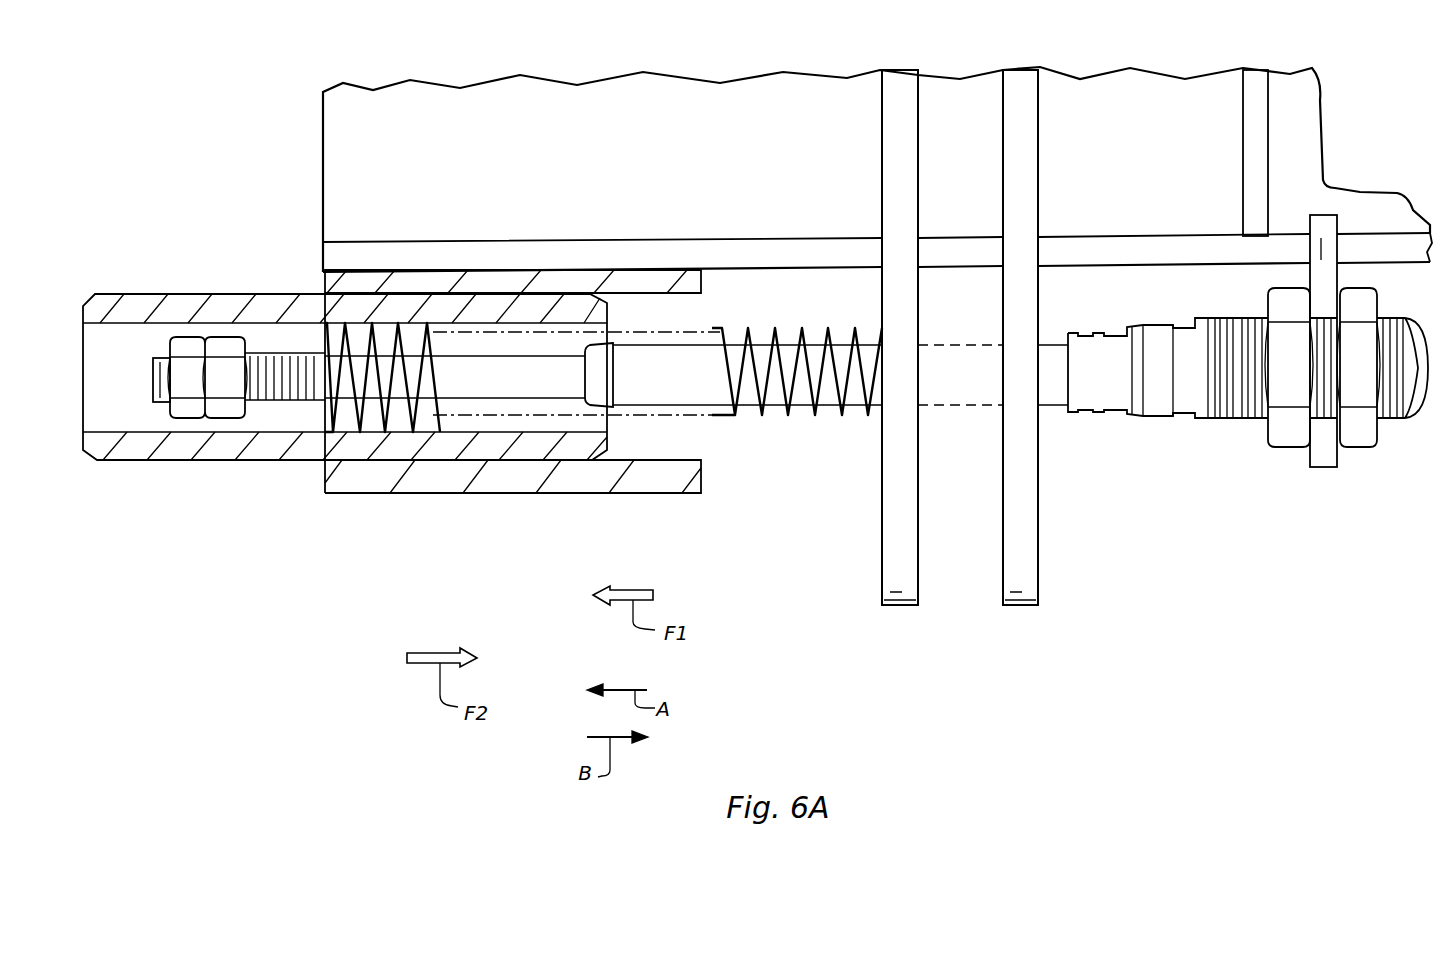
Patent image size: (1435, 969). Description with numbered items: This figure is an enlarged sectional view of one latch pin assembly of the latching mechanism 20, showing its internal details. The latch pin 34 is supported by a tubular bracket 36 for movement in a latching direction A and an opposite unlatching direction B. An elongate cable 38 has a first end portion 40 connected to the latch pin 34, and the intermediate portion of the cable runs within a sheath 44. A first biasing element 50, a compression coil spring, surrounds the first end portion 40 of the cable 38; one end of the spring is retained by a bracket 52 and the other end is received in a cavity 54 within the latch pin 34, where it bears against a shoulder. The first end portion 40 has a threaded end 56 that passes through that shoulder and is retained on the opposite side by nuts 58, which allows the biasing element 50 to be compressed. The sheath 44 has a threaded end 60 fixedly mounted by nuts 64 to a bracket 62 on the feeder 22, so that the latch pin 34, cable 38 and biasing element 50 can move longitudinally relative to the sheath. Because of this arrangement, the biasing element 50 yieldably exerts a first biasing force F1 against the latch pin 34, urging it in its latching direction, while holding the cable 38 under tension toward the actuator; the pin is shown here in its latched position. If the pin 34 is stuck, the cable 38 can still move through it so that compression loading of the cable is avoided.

The latching mechanism 20 is at (1178, 655).
The feeder 22 is at (323, 122).
The latch pin 34 is at (232, 462).
The tubular bracket 36 is at (488, 493).
The cable 38 is at (576, 423).
The first end portion 40 is at (773, 410).
The sheath 44 is at (1248, 442).
The first biasing element 50 is at (847, 415).
The bracket 52 is at (902, 605).
The cavity 54 is at (597, 423).
The threaded end 56 is at (163, 402).
The nuts 58 is at (222, 337).
The threaded end 60 is at (1410, 420).
The bracket 62 is at (1327, 467).
The nuts 64 is at (1273, 437).